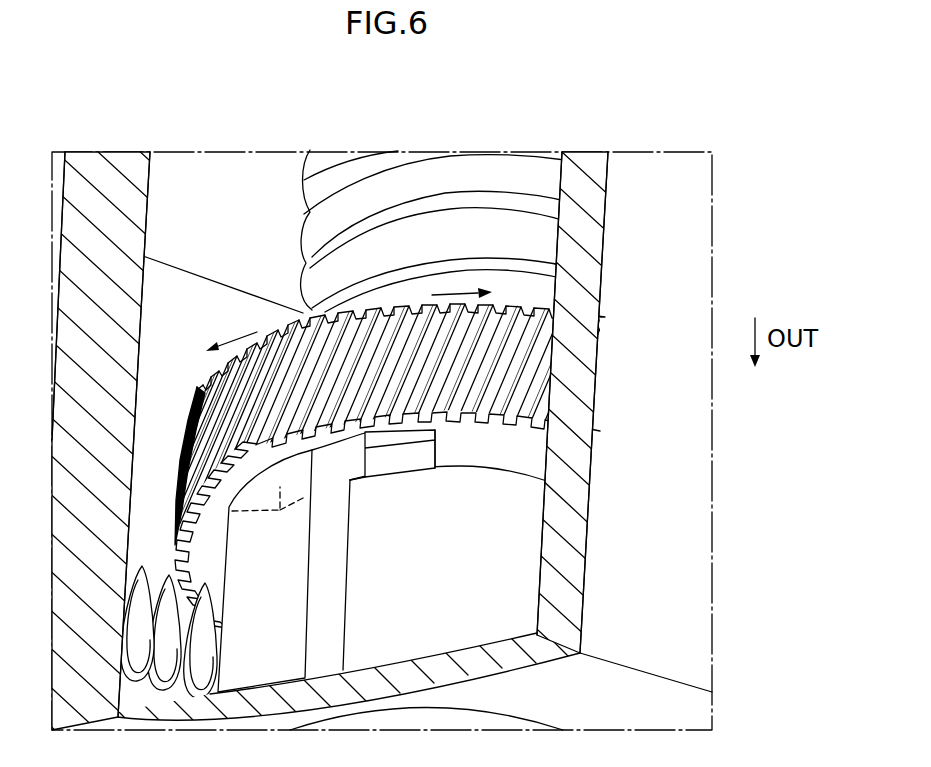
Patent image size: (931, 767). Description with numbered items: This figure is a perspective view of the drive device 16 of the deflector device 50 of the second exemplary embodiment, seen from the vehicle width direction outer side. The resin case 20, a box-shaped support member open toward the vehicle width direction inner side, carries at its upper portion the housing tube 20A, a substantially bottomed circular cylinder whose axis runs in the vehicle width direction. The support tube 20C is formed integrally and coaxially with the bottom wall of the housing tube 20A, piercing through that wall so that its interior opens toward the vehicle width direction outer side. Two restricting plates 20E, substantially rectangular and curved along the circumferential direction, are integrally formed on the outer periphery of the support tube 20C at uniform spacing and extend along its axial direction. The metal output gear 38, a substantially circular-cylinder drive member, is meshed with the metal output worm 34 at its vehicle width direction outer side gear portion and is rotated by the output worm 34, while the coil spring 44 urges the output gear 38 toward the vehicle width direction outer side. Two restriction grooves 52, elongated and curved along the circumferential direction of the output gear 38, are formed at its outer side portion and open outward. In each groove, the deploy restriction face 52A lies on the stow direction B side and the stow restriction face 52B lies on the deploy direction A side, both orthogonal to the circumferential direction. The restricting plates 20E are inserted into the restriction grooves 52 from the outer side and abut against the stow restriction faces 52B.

The drive device 16 is at (410, 398).
The deflector device 50 is at (410, 398).
The case 20 is at (697, 596).
The housing tube 20A is at (192, 249).
The support tube 20C is at (520, 533).
The restricting plates 20E is at (370, 478).
The coil spring 44 is at (305, 176).
The output gear 38 is at (193, 391).
The output worm 34 is at (143, 565).
The restriction grooves 52 is at (383, 463).
The deploy restriction face 52A is at (434, 461).
The stow restriction face 52B is at (248, 513).
The deploy direction A is at (237, 340).
The stow direction B is at (453, 294).